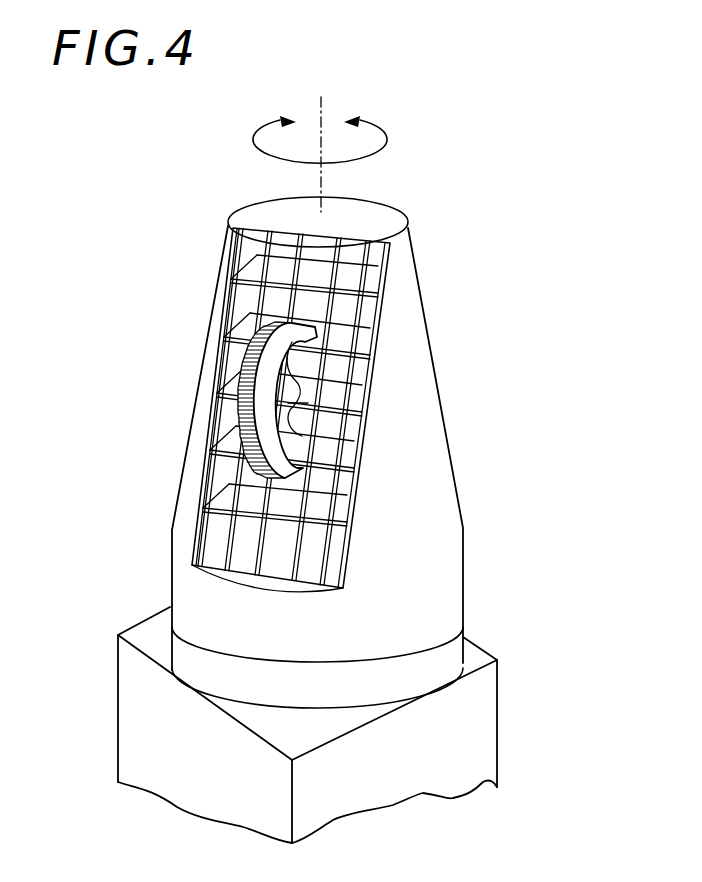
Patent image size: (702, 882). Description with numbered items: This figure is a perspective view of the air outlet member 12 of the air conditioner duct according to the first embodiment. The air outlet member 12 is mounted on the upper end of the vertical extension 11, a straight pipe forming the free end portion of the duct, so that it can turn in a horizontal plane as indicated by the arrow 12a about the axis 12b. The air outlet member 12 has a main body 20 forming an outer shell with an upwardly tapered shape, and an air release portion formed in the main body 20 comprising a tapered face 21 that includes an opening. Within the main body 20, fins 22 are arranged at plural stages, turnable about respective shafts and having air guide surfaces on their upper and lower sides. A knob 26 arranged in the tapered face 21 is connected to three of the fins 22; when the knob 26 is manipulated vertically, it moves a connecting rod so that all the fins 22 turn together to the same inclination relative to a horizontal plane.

The vertical extension 11 is at (500, 688).
The air outlet member 12 is at (450, 391).
The arrow 12a is at (256, 139).
The axis 12b is at (323, 108).
The main body 20 is at (457, 475).
The tapered face 21 is at (221, 315).
The fins 22 is at (373, 287).
The knob 26 is at (232, 408).